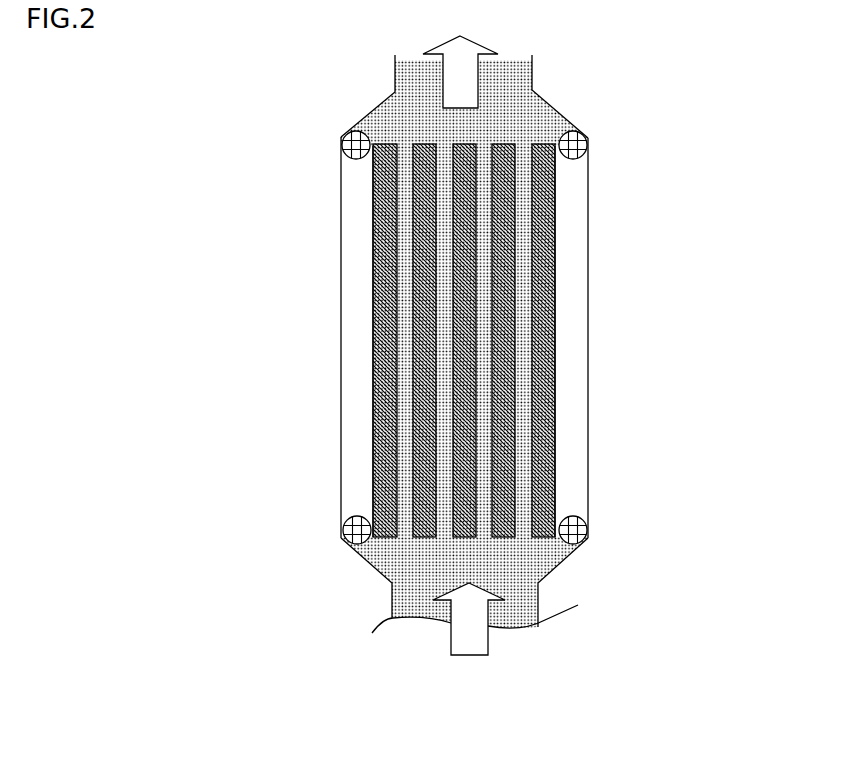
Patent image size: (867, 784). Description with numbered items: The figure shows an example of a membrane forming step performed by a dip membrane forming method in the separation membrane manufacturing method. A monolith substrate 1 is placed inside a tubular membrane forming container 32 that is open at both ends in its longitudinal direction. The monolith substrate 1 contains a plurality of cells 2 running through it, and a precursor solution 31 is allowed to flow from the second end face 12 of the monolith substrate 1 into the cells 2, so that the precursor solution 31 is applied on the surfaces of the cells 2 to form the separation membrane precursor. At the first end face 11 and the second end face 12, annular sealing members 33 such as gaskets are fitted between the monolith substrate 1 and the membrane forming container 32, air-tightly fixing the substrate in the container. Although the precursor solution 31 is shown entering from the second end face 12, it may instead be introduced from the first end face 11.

The monolith substrate 1 is at (552, 340).
The cells 2 is at (523, 280).
The first end face 11 is at (407, 133).
The second end face 12 is at (405, 542).
The precursor solution 31 is at (522, 117).
The membrane forming container 32 is at (589, 410).
The annular sealing members 33 is at (353, 150).